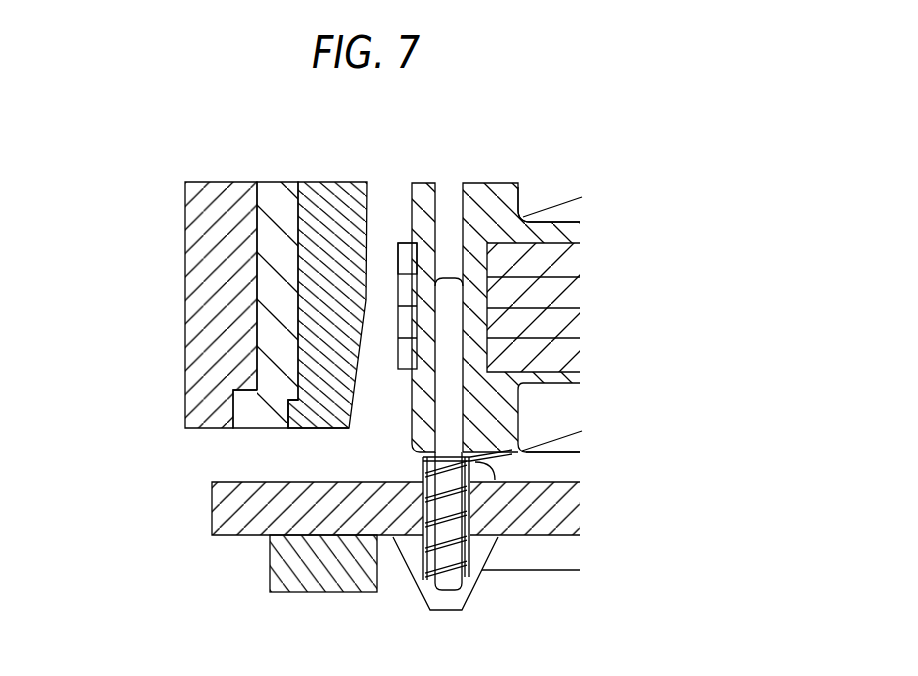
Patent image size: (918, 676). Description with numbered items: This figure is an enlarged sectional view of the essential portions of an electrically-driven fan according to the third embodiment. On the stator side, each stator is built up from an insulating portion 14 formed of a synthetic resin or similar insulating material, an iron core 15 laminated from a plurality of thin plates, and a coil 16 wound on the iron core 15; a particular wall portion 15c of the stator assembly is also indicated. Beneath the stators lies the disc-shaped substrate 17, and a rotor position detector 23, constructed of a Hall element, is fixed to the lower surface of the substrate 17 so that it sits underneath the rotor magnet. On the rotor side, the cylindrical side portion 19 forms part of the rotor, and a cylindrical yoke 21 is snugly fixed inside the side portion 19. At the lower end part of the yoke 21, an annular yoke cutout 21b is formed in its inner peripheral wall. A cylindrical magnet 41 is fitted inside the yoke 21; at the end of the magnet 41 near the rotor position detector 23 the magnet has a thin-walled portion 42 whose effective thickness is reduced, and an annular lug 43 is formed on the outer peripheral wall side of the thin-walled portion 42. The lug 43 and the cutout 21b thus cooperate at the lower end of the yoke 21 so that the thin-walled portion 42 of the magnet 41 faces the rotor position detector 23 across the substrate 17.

The insulating portion 14 is at (485, 202).
The iron core 15 is at (410, 245).
The housing wall portion 15c is at (398, 258).
The coil 16 is at (538, 203).
The disc-shaped substrate 17 is at (233, 515).
The cylindrical side portion 19 is at (210, 321).
The cylindrical yoke 21 is at (275, 267).
The annular yoke cutout 21b is at (328, 428).
The rotor position detector 23 is at (288, 567).
The cylindrical magnet 41 is at (328, 219).
The thin-walled portion 42 is at (320, 381).
The annular lug 43 is at (293, 428).